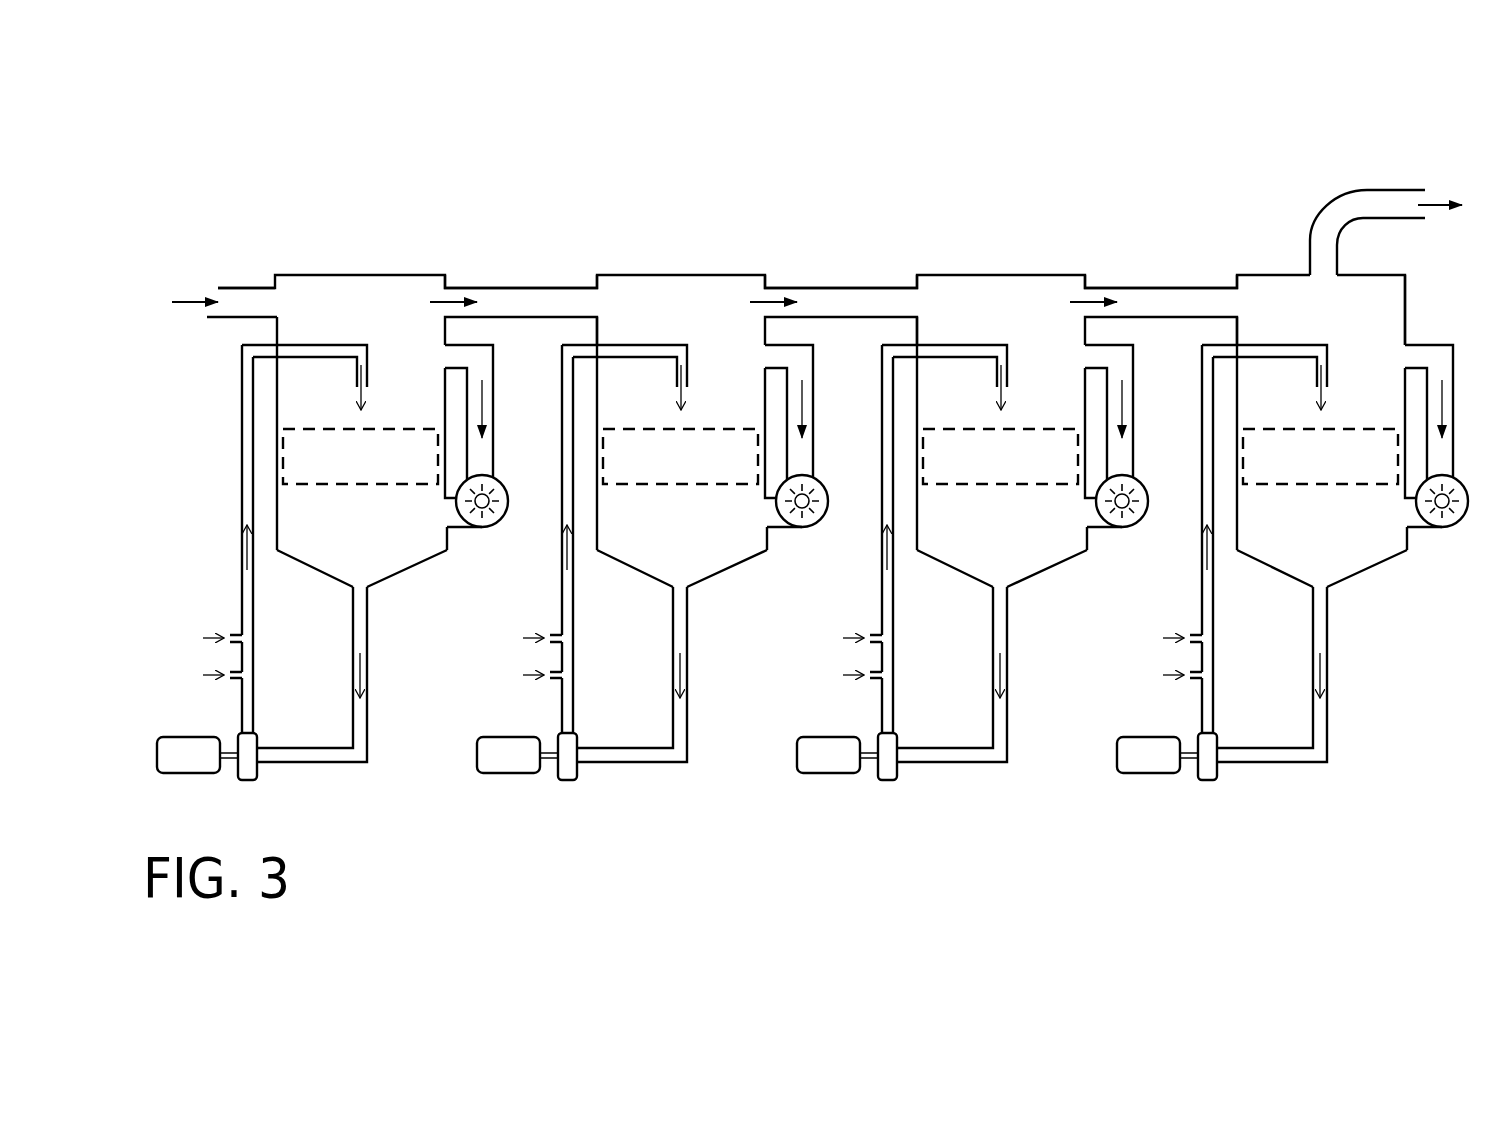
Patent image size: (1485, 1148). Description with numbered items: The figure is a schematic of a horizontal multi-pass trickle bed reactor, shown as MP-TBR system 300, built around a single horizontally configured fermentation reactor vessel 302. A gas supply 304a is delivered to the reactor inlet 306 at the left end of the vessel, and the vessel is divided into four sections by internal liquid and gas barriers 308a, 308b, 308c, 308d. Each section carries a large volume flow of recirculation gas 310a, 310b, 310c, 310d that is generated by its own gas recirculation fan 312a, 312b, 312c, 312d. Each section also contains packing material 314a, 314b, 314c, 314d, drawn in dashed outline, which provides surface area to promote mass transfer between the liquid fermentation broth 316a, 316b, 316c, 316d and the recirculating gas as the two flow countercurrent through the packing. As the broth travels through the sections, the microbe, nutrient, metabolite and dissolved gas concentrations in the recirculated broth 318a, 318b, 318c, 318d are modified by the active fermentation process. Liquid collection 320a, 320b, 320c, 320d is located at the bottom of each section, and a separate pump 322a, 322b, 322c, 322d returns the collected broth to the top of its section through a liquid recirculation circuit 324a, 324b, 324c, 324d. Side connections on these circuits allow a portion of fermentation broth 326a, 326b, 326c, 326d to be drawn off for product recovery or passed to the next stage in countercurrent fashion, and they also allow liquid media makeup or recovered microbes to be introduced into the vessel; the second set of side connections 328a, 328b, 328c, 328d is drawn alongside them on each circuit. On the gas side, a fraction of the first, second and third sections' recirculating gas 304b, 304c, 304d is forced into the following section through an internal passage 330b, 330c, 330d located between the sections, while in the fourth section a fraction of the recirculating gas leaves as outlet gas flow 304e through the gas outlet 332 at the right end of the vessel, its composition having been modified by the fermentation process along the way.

The MP-TBR system 300 is at (228, 148).
The fermentation reactor vessel 302 is at (360, 275).
The gas supply 304a is at (186, 300).
The recirculating gas fraction 304b is at (438, 305).
The recirculating gas fraction 304c is at (758, 305).
The recirculating gas fraction 304d is at (1078, 305).
The outlet gas flow 304e is at (1432, 212).
The reactor inlet 306 is at (250, 288).
The internal liquid and gas barrier 308a is at (278, 540).
The internal liquid and gas barrier 308b is at (687, 433).
The internal liquid and gas barrier 308c is at (1007, 433).
The internal liquid and gas barrier 308d is at (1327, 433).
The recirculation gas 310a is at (477, 412).
The recirculation gas 310b is at (746, 433).
The recirculation gas 310c is at (1066, 433).
The recirculation gas 310d is at (1386, 433).
The gas recirculation fan 312a is at (463, 509).
The gas recirculation fan 312b is at (763, 505).
The gas recirculation fan 312c is at (1083, 505).
The gas recirculation fan 312d is at (1403, 505).
The packing material 314a is at (383, 483).
The packing material 314b is at (680, 456).
The packing material 314c is at (1000, 456).
The packing material 314d is at (1320, 456).
The liquid fermentation broth 316a is at (356, 402).
The liquid fermentation broth 316b is at (642, 387).
The liquid fermentation broth 316c is at (962, 387).
The liquid fermentation broth 316d is at (1282, 387).
The recirculated liquid fermentation broth 318a is at (364, 675).
The recirculated liquid fermentation broth 318b is at (678, 674).
The recirculated liquid fermentation broth 318c is at (996, 674).
The recirculated liquid fermentation broth 318d is at (1318, 674).
The liquid collection 320a is at (368, 588).
The liquid collection 320b is at (684, 586).
The liquid collection 320c is at (1003, 586).
The liquid collection 320d is at (1324, 586).
The pump 322a is at (252, 747).
The pump 322b is at (572, 742).
The pump 322c is at (890, 742).
The pump 322d is at (1212, 742).
The liquid recirculation circuit 324a is at (255, 593).
The liquid recirculation circuit 324b is at (609, 539).
The liquid recirculation circuit 324c is at (928, 539).
The liquid recirculation circuit 324d is at (1249, 539).
The portion of fermentation broth 326a is at (214, 636).
The portion of fermentation broth 326b is at (510, 620).
The portion of fermentation broth 326c is at (830, 620).
The portion of fermentation broth 326d is at (1150, 620).
The second inlet port 328a is at (218, 676).
The second inlet port 328b is at (511, 691).
The second inlet port 328c is at (831, 691).
The second inlet port 328d is at (1151, 691).
The internal passage 330b is at (560, 288).
The internal passage 330c is at (880, 288).
The internal passage 330d is at (1200, 288).
The gas outlet 332 is at (1403, 190).